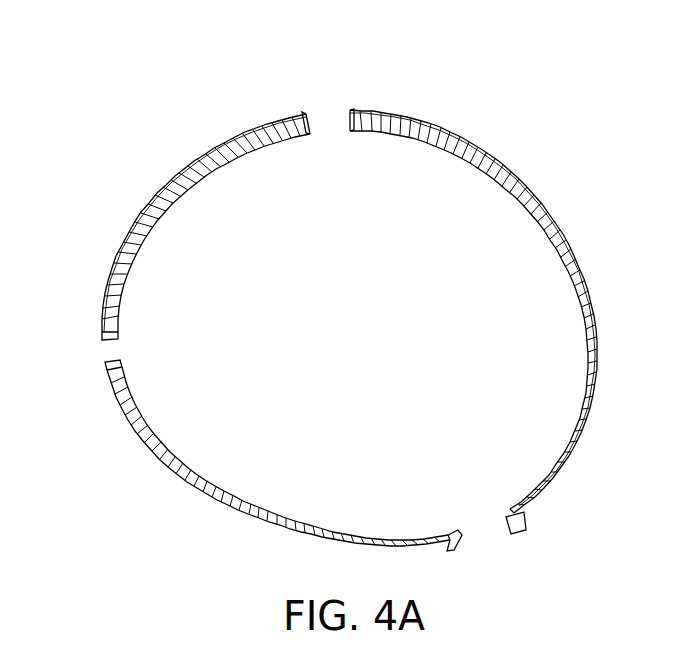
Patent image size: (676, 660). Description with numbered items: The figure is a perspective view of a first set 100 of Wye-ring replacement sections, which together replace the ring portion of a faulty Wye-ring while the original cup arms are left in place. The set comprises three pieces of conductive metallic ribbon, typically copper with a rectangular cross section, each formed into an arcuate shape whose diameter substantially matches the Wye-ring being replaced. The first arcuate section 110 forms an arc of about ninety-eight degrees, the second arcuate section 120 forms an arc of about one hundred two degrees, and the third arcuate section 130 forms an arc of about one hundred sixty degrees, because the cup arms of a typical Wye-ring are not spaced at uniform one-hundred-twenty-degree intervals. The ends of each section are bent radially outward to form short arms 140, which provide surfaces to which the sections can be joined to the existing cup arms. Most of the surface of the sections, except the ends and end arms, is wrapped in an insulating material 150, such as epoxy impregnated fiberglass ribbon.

The first set of Wye-ring replacement sections 100 is at (196, 54).
The first arcuate section 110 is at (150, 200).
The second arcuate section 120 is at (180, 477).
The third arcuate section 130 is at (487, 153).
The end arms 140 is at (350, 115).
The insulating material 150 is at (548, 238).